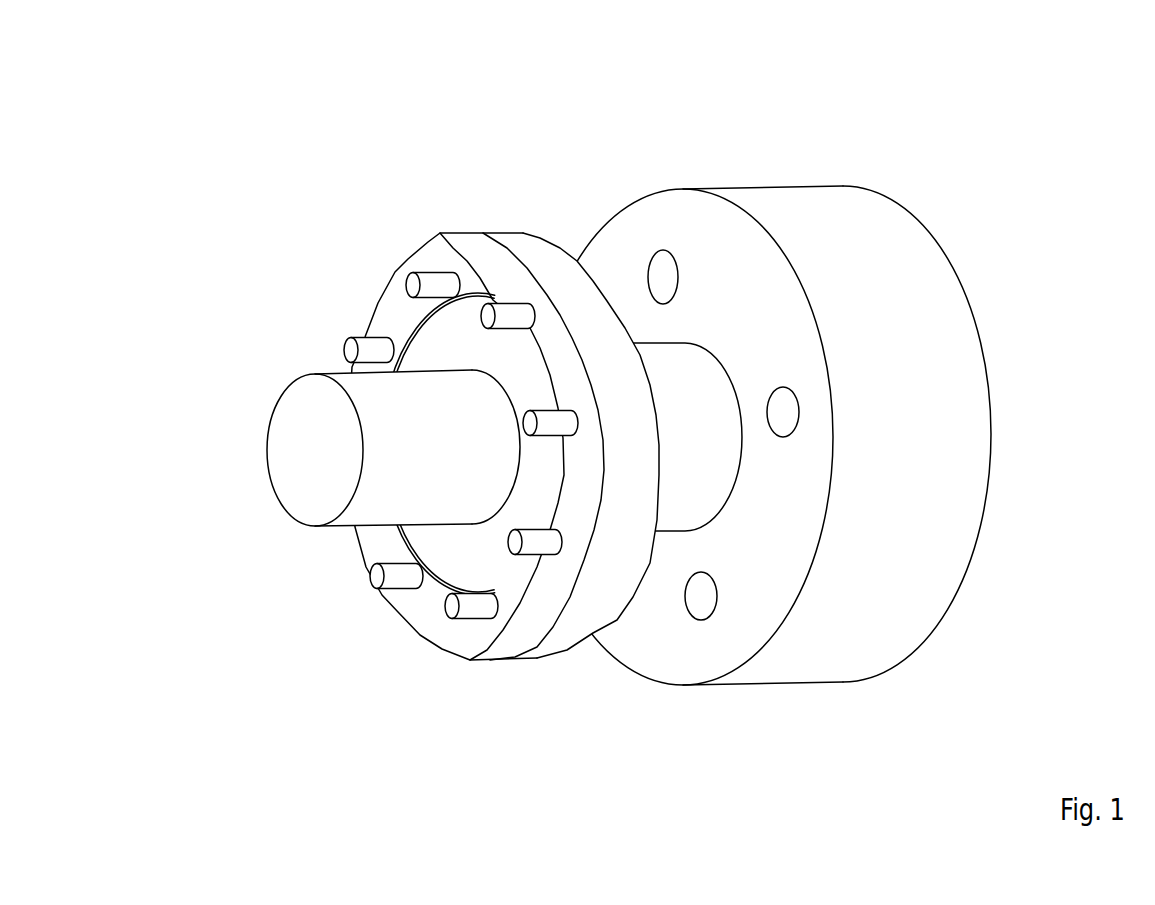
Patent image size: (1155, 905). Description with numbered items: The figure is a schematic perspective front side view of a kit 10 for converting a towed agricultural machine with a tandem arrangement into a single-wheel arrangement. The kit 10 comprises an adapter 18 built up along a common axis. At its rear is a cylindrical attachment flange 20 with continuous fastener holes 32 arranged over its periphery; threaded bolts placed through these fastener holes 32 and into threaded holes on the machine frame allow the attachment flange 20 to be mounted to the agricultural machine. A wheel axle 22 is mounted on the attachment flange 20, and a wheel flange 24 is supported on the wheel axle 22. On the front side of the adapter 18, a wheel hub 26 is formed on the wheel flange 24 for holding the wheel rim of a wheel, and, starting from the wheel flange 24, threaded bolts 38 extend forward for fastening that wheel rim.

The kit 10 is at (603, 438).
The adapter 18 is at (468, 469).
The cylindrical attachment flange 20 is at (801, 428).
The wheel axle 22 is at (660, 510).
The wheel flange 24 is at (527, 247).
The wheel hub 26 is at (315, 498).
The fastener holes 32 is at (783, 407).
The threaded bolts 38 is at (505, 317).